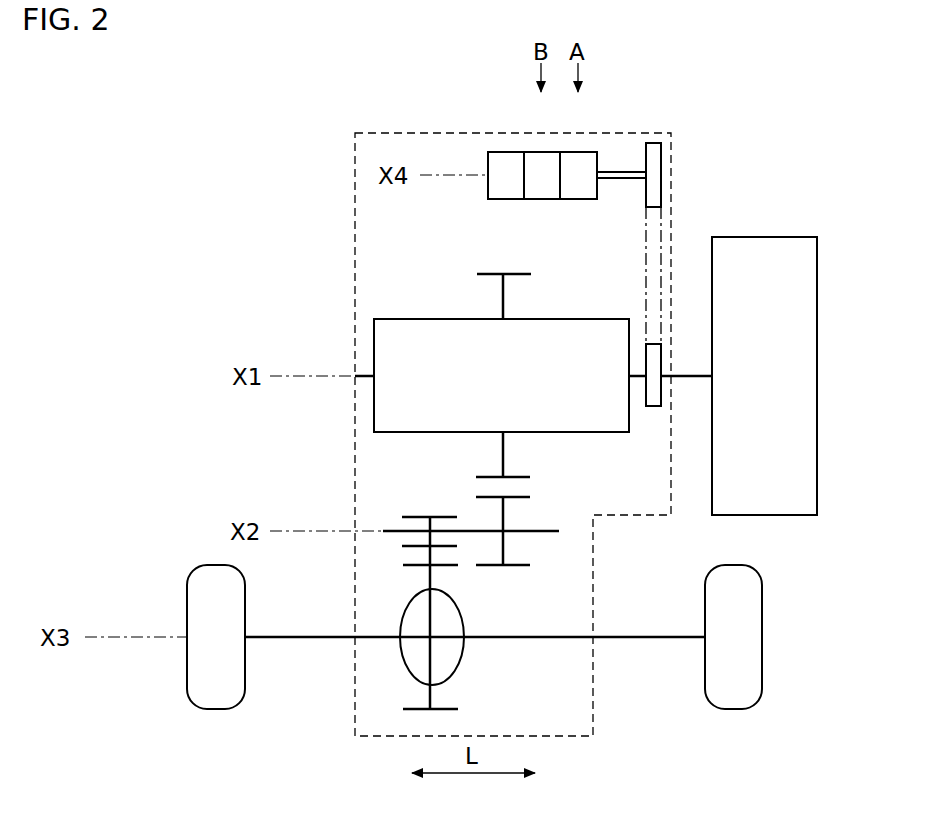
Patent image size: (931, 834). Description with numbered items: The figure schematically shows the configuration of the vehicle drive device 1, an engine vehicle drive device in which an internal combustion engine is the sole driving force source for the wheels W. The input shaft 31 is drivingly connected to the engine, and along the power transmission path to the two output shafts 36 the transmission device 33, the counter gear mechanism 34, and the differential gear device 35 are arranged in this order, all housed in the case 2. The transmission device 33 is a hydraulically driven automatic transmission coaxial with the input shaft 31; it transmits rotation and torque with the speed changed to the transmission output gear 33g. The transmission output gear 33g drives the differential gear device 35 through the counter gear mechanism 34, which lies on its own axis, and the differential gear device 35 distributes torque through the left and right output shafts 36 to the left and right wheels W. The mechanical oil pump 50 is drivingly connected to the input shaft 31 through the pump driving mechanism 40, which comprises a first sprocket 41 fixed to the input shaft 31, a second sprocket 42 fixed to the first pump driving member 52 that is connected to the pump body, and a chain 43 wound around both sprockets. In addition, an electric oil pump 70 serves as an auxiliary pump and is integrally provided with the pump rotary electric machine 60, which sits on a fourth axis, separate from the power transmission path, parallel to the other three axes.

The vehicle drive device 1 is at (205, 151).
The case 2 is at (355, 185).
The input shaft 31 is at (695, 378).
The transmission device 33 is at (398, 319).
The transmission output gear 33g is at (522, 478).
The counter gear mechanism 34 is at (403, 498).
The differential gear device 35 is at (484, 667).
The output shafts 36 is at (315, 640).
The pump driving mechanism 40 is at (676, 282).
The first sprocket 41 is at (655, 406).
The second sprocket 42 is at (650, 187).
The chain 43 is at (662, 247).
The mechanical oil pump 50 is at (582, 158).
The first pump driving member 52 is at (618, 170).
The pump rotary electric machine 60 is at (499, 158).
The electric oil pump 70 is at (549, 158).
The wheels W is at (217, 709).